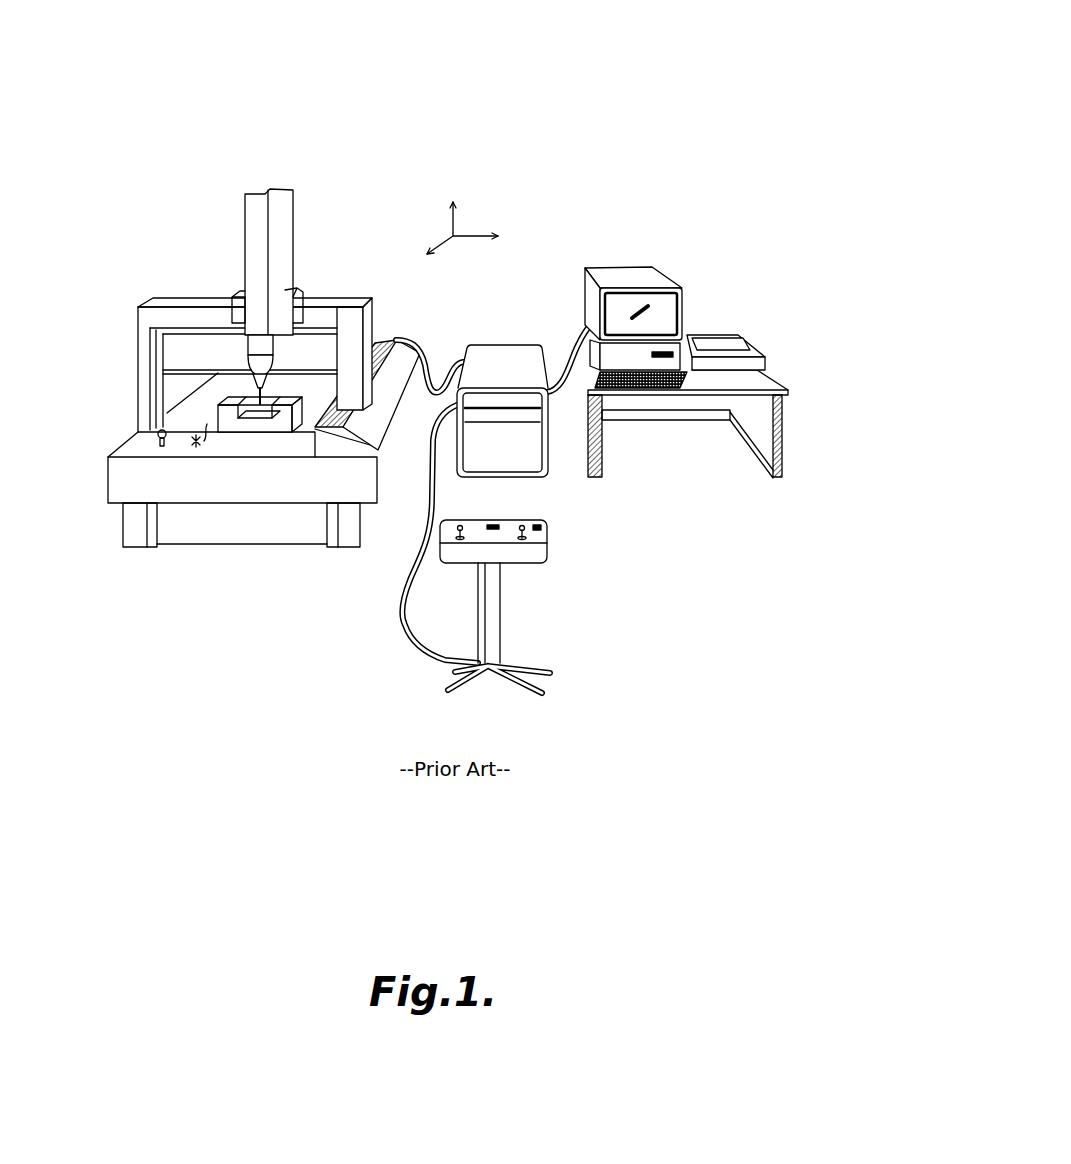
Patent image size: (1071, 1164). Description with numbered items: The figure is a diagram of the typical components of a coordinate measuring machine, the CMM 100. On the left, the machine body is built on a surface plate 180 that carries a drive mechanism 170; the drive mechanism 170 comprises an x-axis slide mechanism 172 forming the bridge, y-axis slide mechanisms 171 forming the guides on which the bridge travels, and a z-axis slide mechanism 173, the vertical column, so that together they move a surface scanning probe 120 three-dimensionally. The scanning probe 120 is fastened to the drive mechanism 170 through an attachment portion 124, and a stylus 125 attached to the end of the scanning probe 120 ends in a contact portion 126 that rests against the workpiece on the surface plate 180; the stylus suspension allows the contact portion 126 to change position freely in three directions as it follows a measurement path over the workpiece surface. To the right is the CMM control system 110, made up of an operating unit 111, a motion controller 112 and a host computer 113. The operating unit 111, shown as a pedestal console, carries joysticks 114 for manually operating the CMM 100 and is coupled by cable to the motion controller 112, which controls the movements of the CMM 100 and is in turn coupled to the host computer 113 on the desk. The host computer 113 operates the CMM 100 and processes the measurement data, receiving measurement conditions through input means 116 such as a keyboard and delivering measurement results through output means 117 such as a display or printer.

The CMM 100 is at (613, 78).
The CMM control system 110 is at (605, 239).
The operating unit 111 is at (553, 573).
The motion controller 112 is at (505, 345).
The host computer 113 is at (740, 311).
The joysticks 114 is at (522, 523).
The input means 116 is at (645, 394).
The output means 117 is at (682, 305).
The surface scanning probe 120 is at (276, 380).
The attachment portion 124 is at (253, 350).
The stylus 125 is at (252, 395).
The contact portion 126 is at (272, 403).
The drive mechanism 170 is at (201, 270).
The y-axis slide mechanism 171 is at (138, 353).
The x-axis slide mechanism 172 is at (176, 302).
The z-axis slide mechanism 173 is at (263, 253).
The surface plate 180 is at (113, 483).